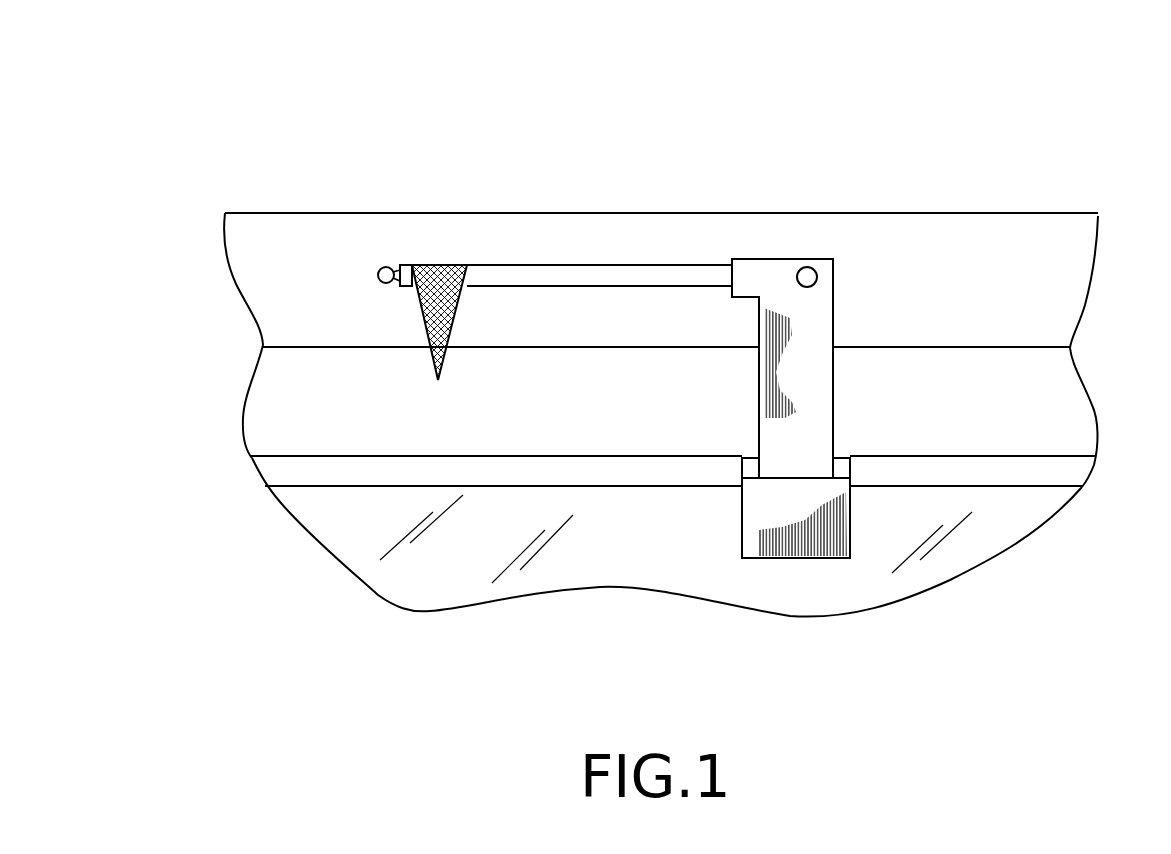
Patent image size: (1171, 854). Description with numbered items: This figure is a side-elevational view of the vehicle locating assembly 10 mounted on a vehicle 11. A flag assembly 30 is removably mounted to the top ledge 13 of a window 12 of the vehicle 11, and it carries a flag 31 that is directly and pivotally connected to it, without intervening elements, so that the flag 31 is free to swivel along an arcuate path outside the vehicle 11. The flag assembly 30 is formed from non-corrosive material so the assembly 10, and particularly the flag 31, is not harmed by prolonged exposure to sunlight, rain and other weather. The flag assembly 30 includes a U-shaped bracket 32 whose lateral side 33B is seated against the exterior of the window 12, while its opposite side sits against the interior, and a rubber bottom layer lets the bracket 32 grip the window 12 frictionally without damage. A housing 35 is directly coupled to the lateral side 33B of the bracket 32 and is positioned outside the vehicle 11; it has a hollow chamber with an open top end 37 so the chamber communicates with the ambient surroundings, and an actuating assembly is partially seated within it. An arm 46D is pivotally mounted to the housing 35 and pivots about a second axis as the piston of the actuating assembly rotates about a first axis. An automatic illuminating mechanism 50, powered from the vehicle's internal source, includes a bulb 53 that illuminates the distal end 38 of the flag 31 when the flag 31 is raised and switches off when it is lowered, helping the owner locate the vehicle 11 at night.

The vehicle locating assembly 10 is at (250, 137).
The vehicle 11 is at (993, 245).
The window 12 is at (1025, 502).
The top ledge 13 is at (557, 486).
The flag assembly 30 is at (448, 265).
The flag 31 is at (440, 313).
The U-shaped bracket 32 is at (865, 458).
The lateral side 33B is at (752, 467).
The housing 35 is at (758, 523).
The open top end 37 is at (767, 259).
The distal end 38 is at (407, 265).
The arm 46D is at (598, 265).
The automatic illuminating mechanism 50 is at (387, 267).
The bulb 53 is at (378, 275).